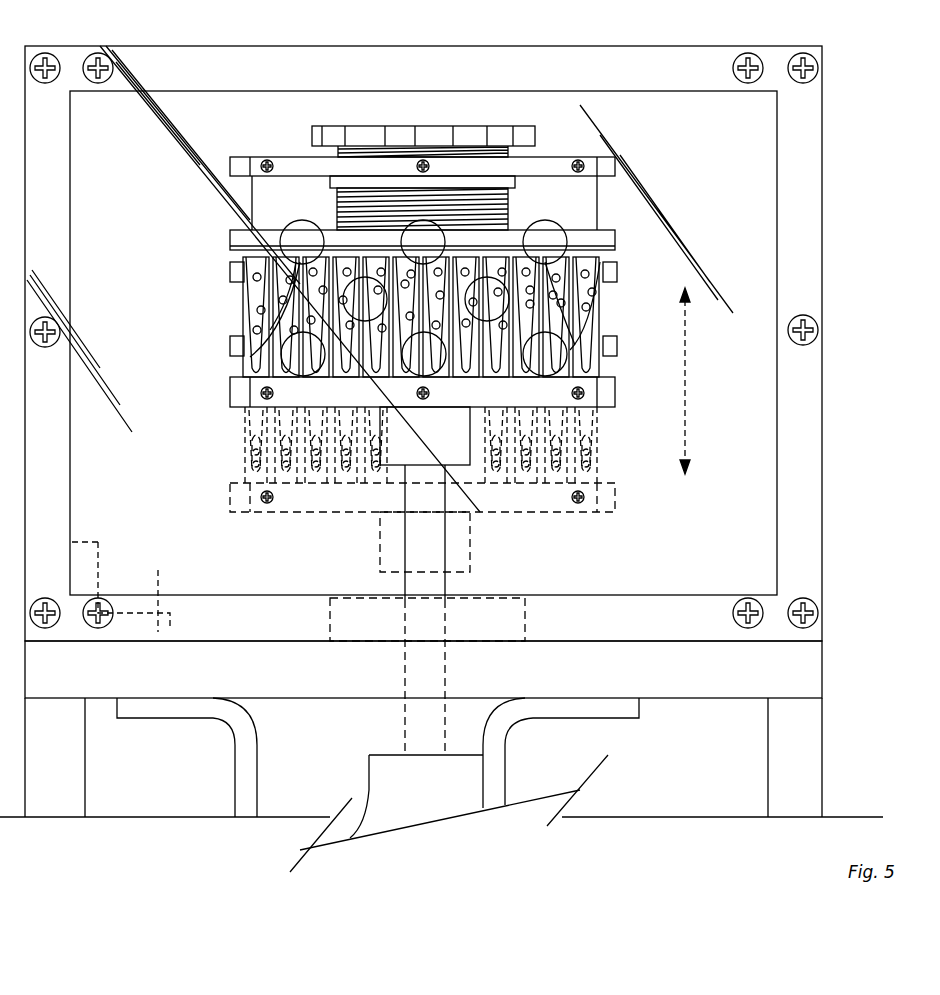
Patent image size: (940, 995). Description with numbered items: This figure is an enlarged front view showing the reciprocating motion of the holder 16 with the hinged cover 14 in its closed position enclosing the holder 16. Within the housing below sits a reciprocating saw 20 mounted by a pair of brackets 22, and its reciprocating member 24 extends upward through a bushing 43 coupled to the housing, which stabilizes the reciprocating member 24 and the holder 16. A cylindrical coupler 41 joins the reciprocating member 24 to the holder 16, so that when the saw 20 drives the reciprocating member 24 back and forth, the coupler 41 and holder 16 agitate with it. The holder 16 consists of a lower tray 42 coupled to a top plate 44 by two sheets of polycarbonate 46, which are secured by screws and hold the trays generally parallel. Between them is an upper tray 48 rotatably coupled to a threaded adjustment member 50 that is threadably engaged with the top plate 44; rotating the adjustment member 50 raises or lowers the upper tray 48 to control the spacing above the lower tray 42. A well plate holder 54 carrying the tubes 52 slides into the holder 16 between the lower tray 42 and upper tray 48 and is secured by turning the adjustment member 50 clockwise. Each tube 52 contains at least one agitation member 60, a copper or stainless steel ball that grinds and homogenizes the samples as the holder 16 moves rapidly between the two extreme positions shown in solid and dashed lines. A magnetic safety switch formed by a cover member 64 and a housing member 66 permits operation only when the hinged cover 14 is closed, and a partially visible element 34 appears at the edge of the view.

The hinged cover 14 is at (822, 100).
The holder 16 is at (260, 118).
The threaded adjustment member 50 is at (514, 125).
The top plate 44 is at (248, 158).
The sheets of polycarbonate 46 is at (300, 185).
The upper tray 48 is at (230, 240).
The tubes 52 is at (596, 272).
The agitation member 60 is at (598, 294).
The well plate holder 54 is at (598, 320).
The lower tray 42 is at (244, 406).
The coupler 41 is at (468, 560).
The bushing 43 is at (525, 614).
The reciprocating member 24 is at (408, 722).
The reciprocating saw 20 is at (380, 778).
The brackets 22 is at (495, 770).
The cover member 64 is at (98, 540).
The housing member 66 is at (158, 590).
The side element 34 is at (5, 409).